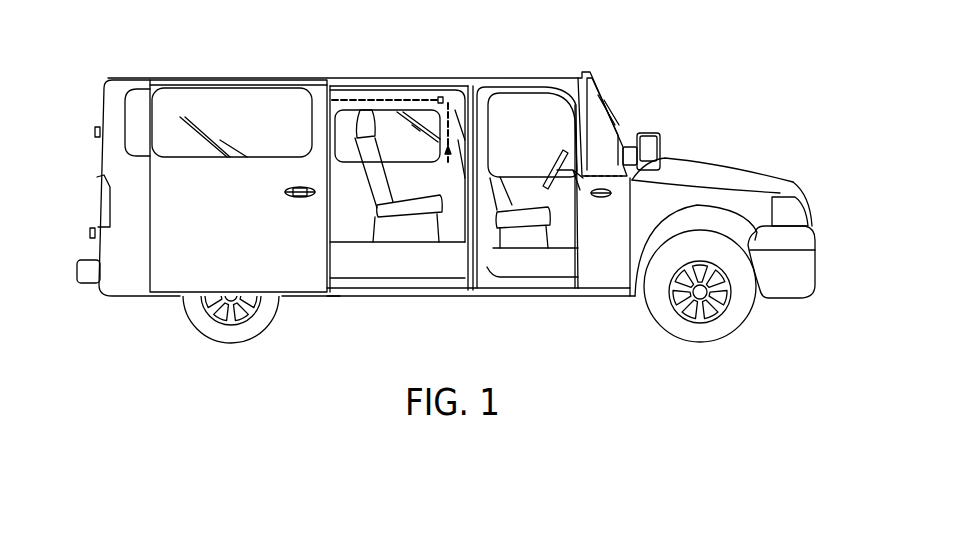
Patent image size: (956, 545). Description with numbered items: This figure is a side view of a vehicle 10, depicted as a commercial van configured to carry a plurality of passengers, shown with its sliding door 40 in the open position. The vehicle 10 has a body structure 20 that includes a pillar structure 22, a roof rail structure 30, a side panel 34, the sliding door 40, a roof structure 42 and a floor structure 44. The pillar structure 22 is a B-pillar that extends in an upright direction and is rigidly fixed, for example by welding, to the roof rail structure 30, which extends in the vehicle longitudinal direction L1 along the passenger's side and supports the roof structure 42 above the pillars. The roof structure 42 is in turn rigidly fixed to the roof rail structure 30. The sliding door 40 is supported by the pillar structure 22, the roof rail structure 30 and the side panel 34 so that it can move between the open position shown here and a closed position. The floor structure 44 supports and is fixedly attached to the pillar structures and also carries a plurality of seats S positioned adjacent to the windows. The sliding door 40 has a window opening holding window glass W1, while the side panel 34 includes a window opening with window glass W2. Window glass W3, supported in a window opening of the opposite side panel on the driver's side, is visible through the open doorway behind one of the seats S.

The vehicle 10 is at (194, 38).
The body structure 20 is at (447, 70).
The pillar structure 22 is at (478, 127).
The roof rail structure 30 is at (405, 98).
The side panel 34 is at (122, 167).
The sliding door 40 is at (172, 268).
The roof structure 42 is at (367, 84).
The floor structure 44 is at (350, 242).
The seats S is at (417, 208).
The window glass W1 is at (263, 117).
The window glass W2 is at (140, 113).
The window glass W3 is at (398, 143).
The vehicle longitudinal direction L1 is at (392, 344).